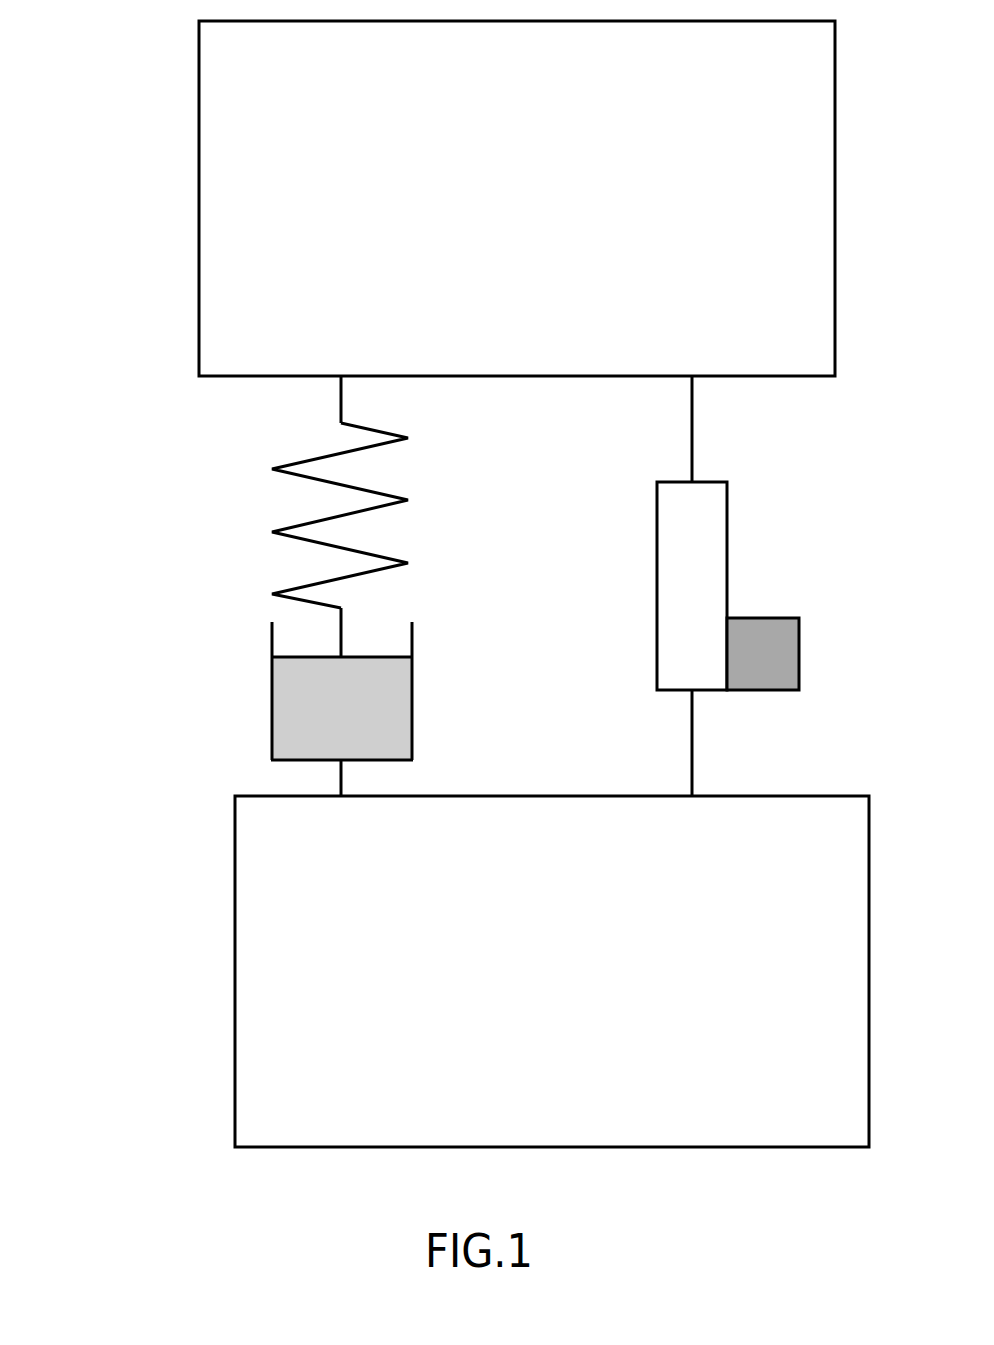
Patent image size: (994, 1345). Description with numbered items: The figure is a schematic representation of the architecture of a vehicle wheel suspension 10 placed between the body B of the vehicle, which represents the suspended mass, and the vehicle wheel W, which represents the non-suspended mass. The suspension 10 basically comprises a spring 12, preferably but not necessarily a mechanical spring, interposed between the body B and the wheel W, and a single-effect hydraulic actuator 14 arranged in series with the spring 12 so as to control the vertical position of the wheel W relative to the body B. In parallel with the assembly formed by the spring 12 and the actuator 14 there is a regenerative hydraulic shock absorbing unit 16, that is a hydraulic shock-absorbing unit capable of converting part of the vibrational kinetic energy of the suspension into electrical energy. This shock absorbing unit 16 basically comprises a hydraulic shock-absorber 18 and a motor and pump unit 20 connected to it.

The vehicle wheel suspension 10 is at (478, 584).
The spring 12 is at (285, 527).
The single-effect hydraulic actuator 14 is at (268, 718).
The regenerative hydraulic shock absorbing unit 16 is at (796, 543).
The hydraulic shock-absorber 18 is at (728, 502).
The motor and pump unit 20 is at (799, 658).